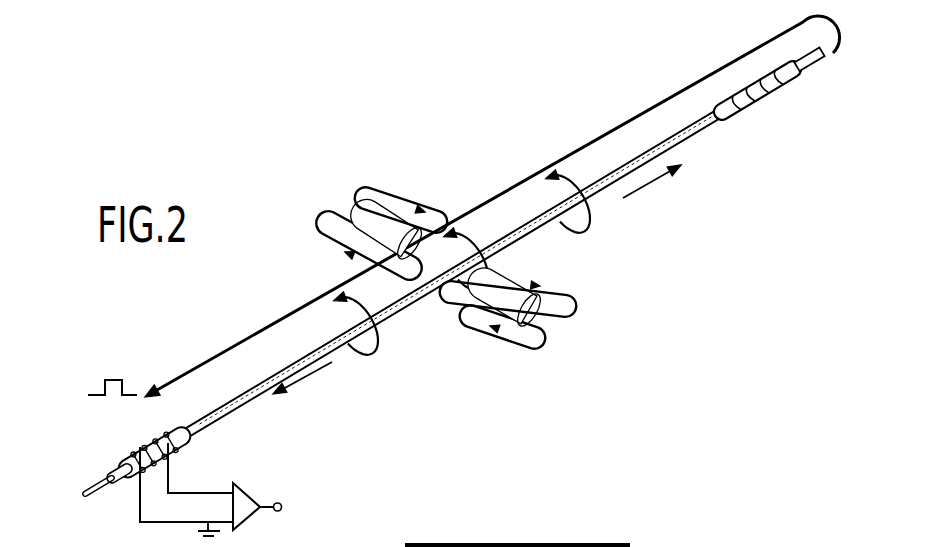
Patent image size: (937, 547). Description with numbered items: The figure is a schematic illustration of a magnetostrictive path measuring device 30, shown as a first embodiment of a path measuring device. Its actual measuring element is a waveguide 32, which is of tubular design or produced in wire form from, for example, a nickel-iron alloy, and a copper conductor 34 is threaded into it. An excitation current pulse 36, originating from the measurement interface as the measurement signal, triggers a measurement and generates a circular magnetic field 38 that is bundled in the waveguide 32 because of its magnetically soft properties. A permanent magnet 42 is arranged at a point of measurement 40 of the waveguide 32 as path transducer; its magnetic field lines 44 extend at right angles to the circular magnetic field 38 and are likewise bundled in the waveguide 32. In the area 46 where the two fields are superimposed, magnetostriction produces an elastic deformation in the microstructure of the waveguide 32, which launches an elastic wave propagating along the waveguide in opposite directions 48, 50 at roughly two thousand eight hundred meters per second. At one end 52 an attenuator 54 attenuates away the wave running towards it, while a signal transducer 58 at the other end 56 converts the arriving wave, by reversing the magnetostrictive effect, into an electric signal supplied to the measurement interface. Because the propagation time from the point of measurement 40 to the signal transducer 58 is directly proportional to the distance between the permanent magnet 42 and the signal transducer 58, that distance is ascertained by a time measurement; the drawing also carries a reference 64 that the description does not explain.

The magnetostrictive path measuring device 30 is at (652, 252).
The waveguide 32 is at (702, 128).
The copper conductor 34 is at (86, 477).
The excitation current pulse 36 is at (118, 380).
The circular magnetic field 38 is at (376, 350).
The point of measurement 40 is at (560, 342).
The permanent magnet 42 is at (512, 346).
The magnetic field lines 44 is at (566, 304).
The area 46 is at (483, 229).
The direction 48 is at (322, 366).
The direction 50 is at (651, 184).
The end 52 is at (728, 122).
The attenuator 54 is at (797, 86).
The other end 56 is at (168, 440).
The signal transducer 58 is at (130, 432).
The reference line 64 is at (548, 540).